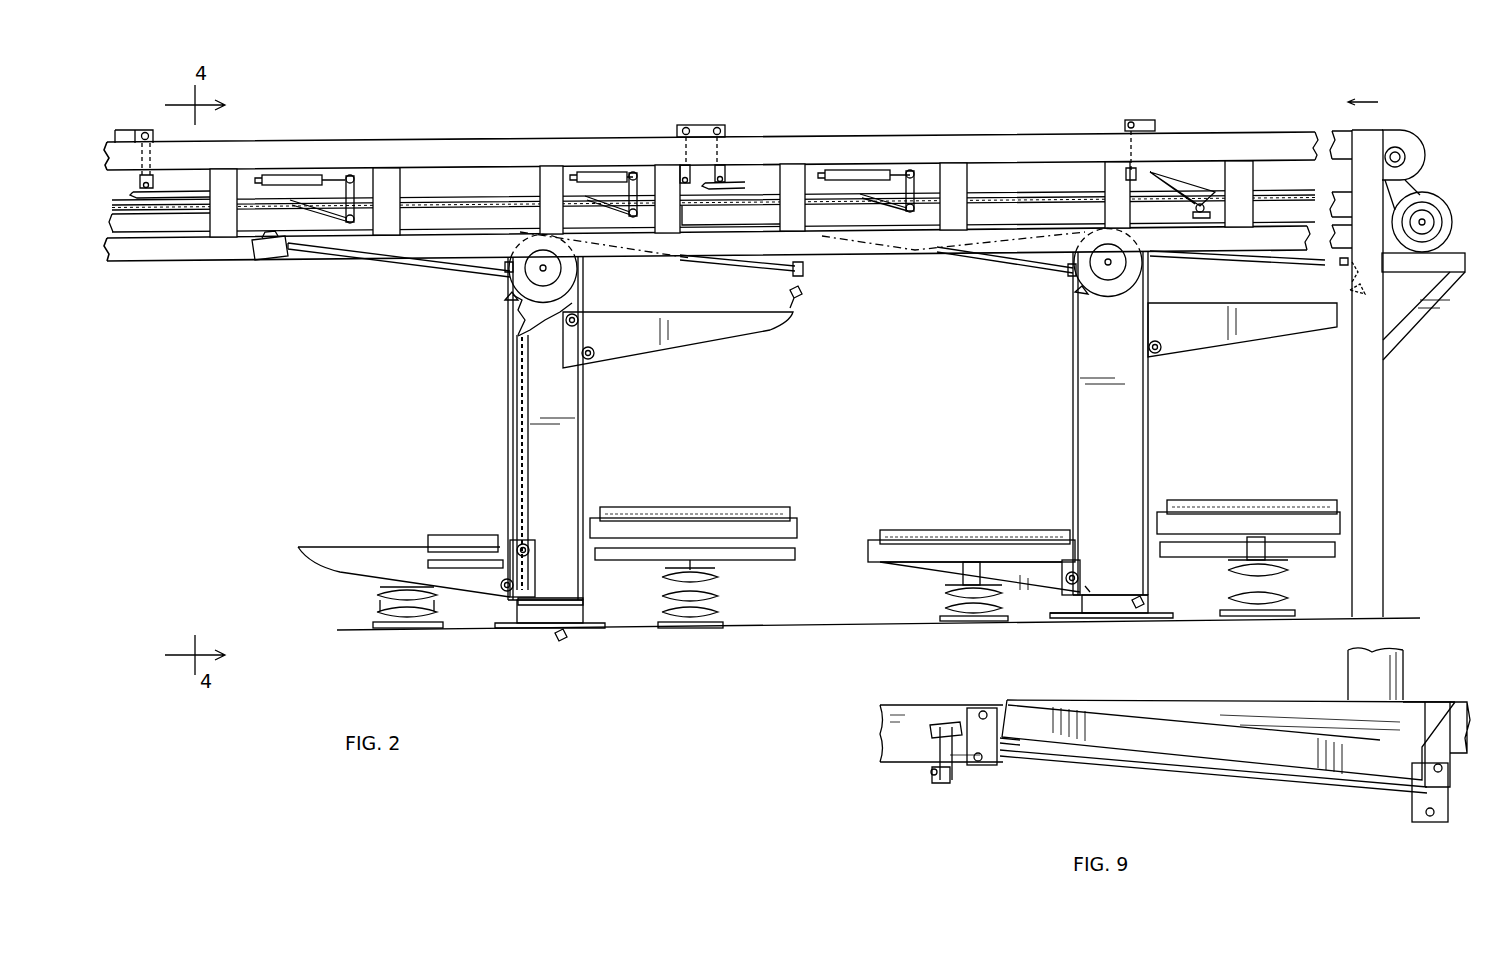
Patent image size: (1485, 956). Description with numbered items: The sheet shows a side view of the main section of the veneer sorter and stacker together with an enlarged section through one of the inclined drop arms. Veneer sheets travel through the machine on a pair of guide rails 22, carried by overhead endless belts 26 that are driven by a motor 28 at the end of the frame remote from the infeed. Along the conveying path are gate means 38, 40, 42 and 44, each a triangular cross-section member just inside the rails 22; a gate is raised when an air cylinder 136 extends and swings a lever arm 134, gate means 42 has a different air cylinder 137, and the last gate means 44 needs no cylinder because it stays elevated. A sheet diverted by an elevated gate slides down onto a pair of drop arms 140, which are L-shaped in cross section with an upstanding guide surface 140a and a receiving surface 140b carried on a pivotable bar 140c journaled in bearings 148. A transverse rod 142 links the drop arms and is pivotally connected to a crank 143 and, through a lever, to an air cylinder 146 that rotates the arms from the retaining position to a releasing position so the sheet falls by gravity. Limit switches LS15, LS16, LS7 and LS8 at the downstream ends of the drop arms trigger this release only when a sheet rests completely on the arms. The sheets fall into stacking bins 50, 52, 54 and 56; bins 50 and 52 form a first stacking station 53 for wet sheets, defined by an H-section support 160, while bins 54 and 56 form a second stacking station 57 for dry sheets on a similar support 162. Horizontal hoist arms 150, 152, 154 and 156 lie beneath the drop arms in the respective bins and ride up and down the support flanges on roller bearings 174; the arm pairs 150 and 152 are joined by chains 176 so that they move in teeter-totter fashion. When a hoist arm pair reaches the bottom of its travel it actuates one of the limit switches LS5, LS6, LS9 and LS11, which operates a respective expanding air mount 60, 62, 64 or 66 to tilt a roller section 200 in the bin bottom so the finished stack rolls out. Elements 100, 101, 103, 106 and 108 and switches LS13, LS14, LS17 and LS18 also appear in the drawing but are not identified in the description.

In FIG. 2, the overhead endless belts 26 is at (130, 218).
In FIG. 2, the guide rail 106 is at (455, 188).
In FIG. 2, the guide rails 22 is at (128, 200).
In FIG. 2, the hold-down bracket 108 is at (158, 128).
In FIG. 2, the air cylinder 136 is at (300, 177).
In FIG. 2, the air cylinder 137 is at (850, 170).
In FIG. 2, the lever arm 134 is at (360, 180).
In FIG. 2, the gate means 38 is at (318, 217).
In FIG. 2, the gate means 40 is at (608, 210).
In FIG. 2, the gate means 42 is at (870, 208).
In FIG. 2, the gate means 44 is at (1170, 176).
In FIG. 2, the drive pulley 100 is at (1392, 132).
In FIG. 2, the motor 28 is at (1445, 195).
In FIG. 2, the direction of travel 103 is at (1382, 100).
In FIG. 2, the frame upright 101 is at (1384, 470).
In FIG. 2, the drop arms 140 is at (395, 268).
In FIG. 9, the drop arms 140 is at (1085, 760).
In FIG. 2, the air cylinder 146 is at (255, 262).
In FIG. 2, the limit switch LS15 is at (505, 282).
In FIG. 2, the limit switch LS17 is at (505, 300).
In FIG. 2, the limit switch LS16 is at (805, 270).
In FIG. 2, the limit switch LS18 is at (802, 296).
In FIG. 2, the limit switch LS7 is at (1066, 274).
In FIG. 2, the limit switch LS13 is at (1075, 293).
In FIG. 2, the limit switch LS8 is at (1345, 270).
In FIG. 2, the limit switch LS14 is at (1350, 290).
In FIG. 2, the H-section stacking station support 160 is at (585, 428).
In FIG. 2, the chains 176 is at (516, 384).
In FIG. 2, the H-section stacking station support 162 is at (1075, 415).
In FIG. 2, the hoist arms 152 is at (728, 335).
In FIG. 2, the hoist arms 156 is at (1288, 330).
In FIG. 2, the roller bearings 174 is at (595, 350).
In FIG. 2, the hoist arms 150 is at (392, 547).
In FIG. 2, the hoist arms 154 is at (1045, 578).
In FIG. 2, the tiltable roller section 200 is at (748, 507).
In FIG. 2, the air mount 60 is at (410, 628).
In FIG. 2, the air mount 62 is at (690, 628).
In FIG. 2, the air mount 64 is at (965, 622).
In FIG. 2, the air mount 66 is at (1262, 618).
In FIG. 2, the first stacking station 53 is at (555, 632).
In FIG. 2, the second stacking station 57 is at (1118, 630).
In FIG. 2, the limit switch LS5 is at (553, 636).
In FIG. 2, the limit switch LS6 is at (575, 597).
In FIG. 2, the limit switch LS9 is at (1088, 585).
In FIG. 2, the limit switch LS11 is at (1135, 612).
In FIG. 2, the stacking bin 50 is at (437, 454).
In FIG. 2, the stacking bin 52 is at (700, 454).
In FIG. 2, the stacking bin 54 is at (1012, 450).
In FIG. 2, the stacking bin 56 is at (1222, 445).
In FIG. 9, the guide surface 140a is at (1240, 725).
In FIG. 9, the receiving surface 140b is at (1377, 740).
In FIG. 9, the pivotable bar 140c is at (1262, 775).
In FIG. 9, the bearings 148 is at (978, 770).
In FIG. 9, the crank 143 is at (935, 748).
In FIG. 9, the transverse rod 142 is at (932, 775).